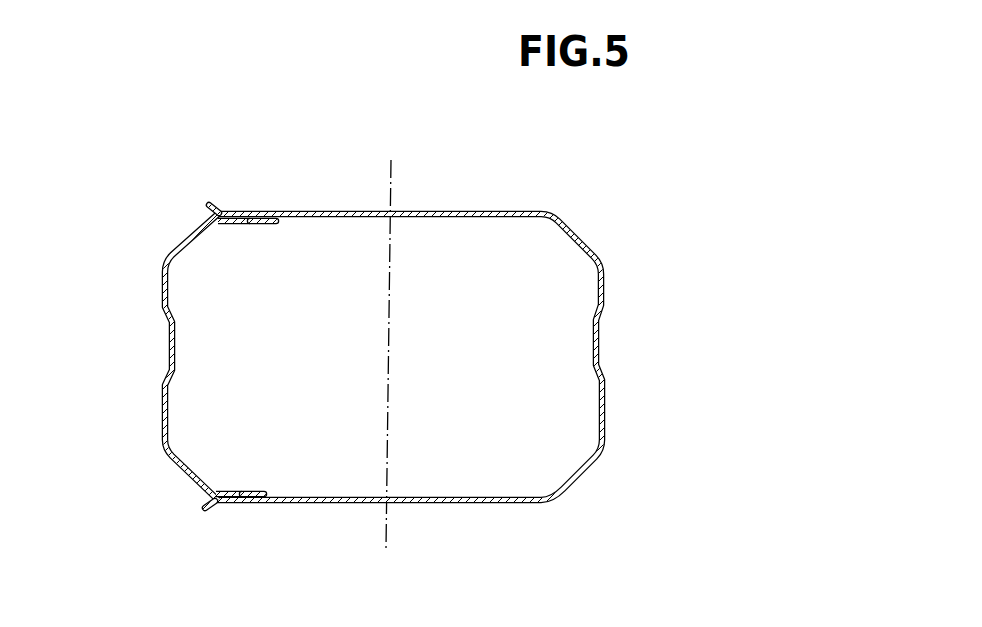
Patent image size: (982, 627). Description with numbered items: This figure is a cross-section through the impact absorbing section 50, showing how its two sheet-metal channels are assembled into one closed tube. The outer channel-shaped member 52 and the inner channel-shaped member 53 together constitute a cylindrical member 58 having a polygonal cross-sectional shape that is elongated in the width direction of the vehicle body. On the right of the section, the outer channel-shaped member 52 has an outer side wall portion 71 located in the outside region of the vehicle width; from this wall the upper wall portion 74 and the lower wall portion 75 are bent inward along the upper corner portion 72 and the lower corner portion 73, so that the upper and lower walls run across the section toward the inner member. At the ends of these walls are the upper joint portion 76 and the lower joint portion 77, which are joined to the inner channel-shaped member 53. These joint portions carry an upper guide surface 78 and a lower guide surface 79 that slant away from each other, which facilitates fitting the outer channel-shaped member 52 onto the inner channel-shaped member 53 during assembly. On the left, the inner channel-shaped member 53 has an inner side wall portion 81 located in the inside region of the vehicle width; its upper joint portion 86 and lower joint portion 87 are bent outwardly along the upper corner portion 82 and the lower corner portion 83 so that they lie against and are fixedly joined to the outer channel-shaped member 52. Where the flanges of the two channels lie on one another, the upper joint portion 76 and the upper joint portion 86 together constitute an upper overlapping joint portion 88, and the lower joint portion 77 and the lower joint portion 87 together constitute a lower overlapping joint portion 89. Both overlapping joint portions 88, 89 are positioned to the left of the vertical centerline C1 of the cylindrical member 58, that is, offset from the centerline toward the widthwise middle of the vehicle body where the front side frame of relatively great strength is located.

The impact absorbing section 50 is at (143, 152).
The cylindrical member 58 is at (312, 108).
The outer channel-shaped member 52 is at (328, 203).
The inner channel-shaped member 53 is at (197, 217).
The outer side wall portion 71 is at (607, 282).
The upper corner portion 72 is at (582, 235).
The lower corner portion 73 is at (585, 470).
The upper wall portion 74 is at (468, 211).
The lower wall portion 75 is at (458, 504).
The upper joint portion 76 is at (237, 224).
The lower joint portion 77 is at (220, 492).
The upper guide surface 78 is at (211, 205).
The lower guide surface 79 is at (205, 510).
The inner side wall portion 81 is at (165, 292).
The upper corner portion 82 is at (187, 238).
The lower corner portion 83 is at (185, 473).
The upper joint portion 86 is at (262, 226).
The lower joint portion 87 is at (252, 491).
The upper overlapping joint portion 88 is at (322, 294).
The lower overlapping joint portion 89 is at (320, 415).
The centerline C1 is at (397, 180).